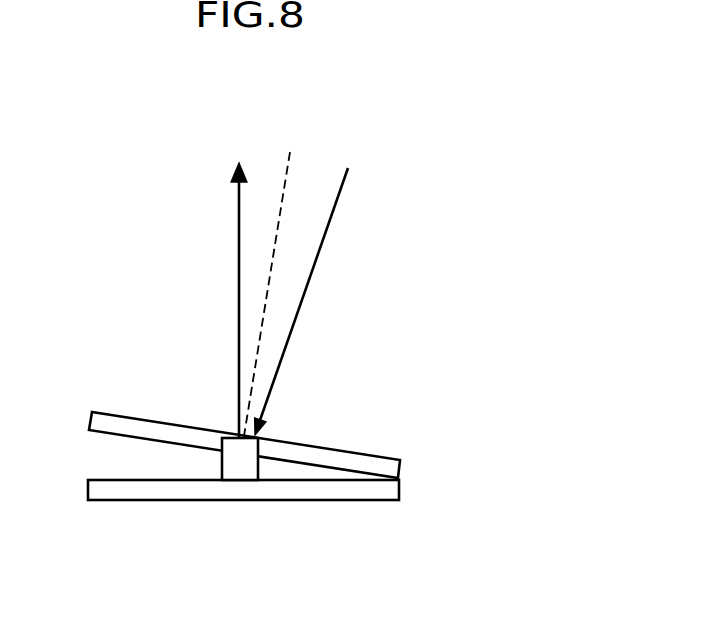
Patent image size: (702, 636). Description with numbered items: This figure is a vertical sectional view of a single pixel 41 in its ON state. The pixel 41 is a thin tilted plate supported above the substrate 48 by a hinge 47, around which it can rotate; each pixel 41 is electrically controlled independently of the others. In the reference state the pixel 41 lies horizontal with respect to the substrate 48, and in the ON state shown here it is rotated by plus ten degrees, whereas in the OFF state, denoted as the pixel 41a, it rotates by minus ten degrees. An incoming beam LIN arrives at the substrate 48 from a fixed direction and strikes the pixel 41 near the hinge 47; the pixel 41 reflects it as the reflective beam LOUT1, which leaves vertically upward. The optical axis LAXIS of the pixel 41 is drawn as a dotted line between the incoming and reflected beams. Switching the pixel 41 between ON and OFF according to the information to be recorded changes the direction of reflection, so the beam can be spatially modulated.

The pixel 41 is at (244, 408).
The pixel in OFF state 41a is at (148, 420).
The hinge 47 is at (233, 500).
The substrate 48 is at (132, 500).
The reflective beam in ON state LOUT1 is at (239, 255).
The optical axis of the pixel LAXIS is at (288, 180).
The incoming beam LIN is at (280, 370).